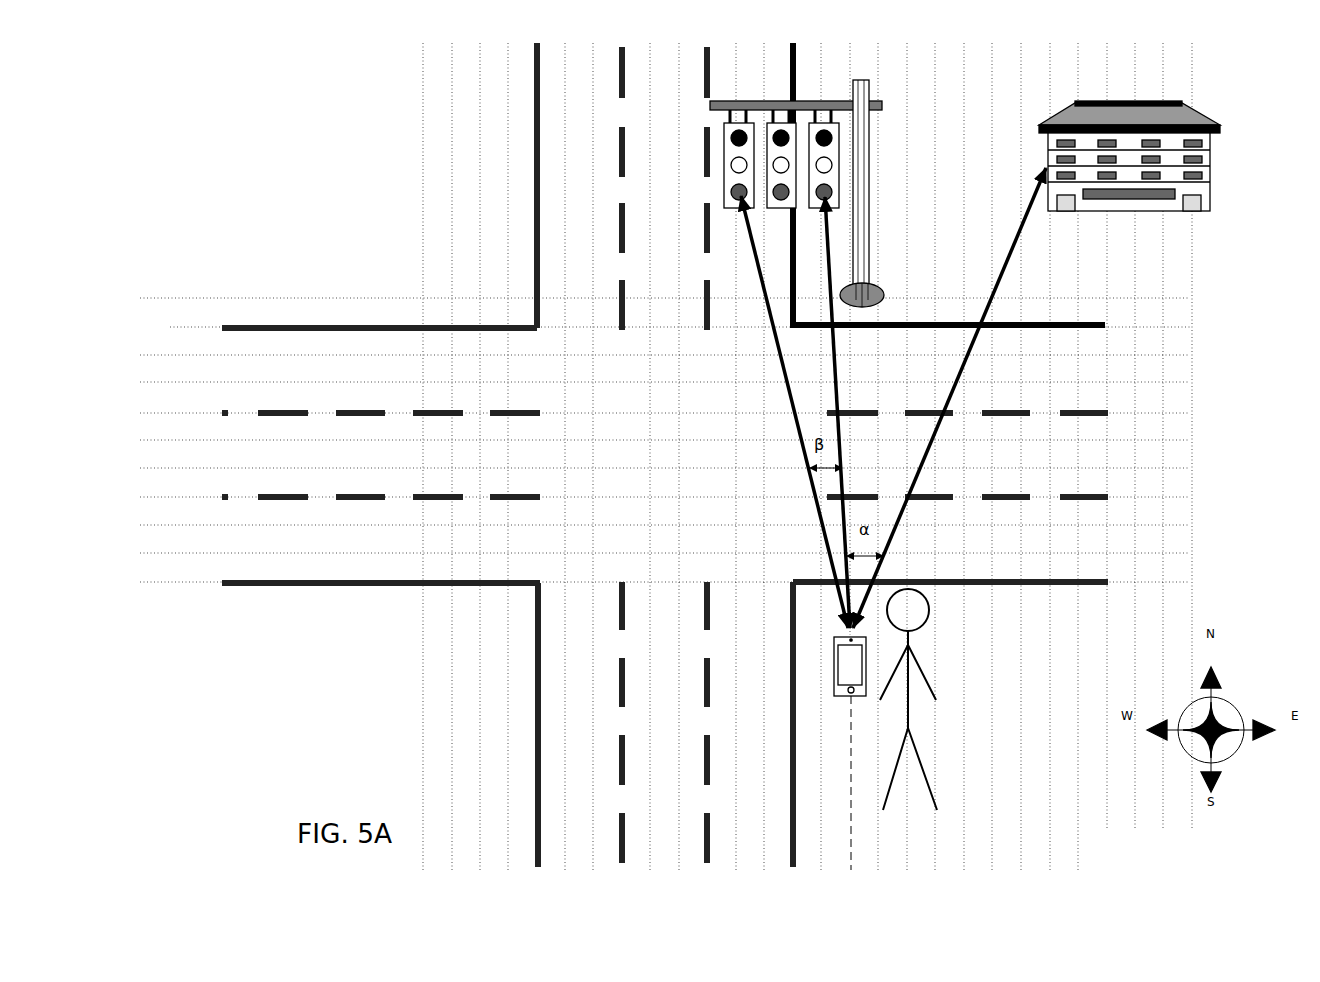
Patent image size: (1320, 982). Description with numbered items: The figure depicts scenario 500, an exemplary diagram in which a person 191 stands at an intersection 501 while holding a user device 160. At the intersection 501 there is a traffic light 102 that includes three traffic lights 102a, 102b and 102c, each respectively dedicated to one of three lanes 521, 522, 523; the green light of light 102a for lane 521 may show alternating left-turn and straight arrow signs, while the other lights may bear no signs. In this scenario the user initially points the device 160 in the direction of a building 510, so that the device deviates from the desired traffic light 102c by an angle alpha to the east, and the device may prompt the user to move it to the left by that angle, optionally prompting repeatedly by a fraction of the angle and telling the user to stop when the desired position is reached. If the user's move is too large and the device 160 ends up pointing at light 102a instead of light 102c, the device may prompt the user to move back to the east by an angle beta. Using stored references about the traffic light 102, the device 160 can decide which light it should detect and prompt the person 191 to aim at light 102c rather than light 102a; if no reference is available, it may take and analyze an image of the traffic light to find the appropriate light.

The scenario 500 is at (399, 127).
The intersection 501 is at (665, 455).
The building 510 is at (1150, 156).
The lane 521 is at (760, 614).
The lane 522 is at (675, 455).
The lane 523 is at (590, 455).
The traffic light 102 is at (878, 90).
The traffic light 102a is at (728, 148).
The traffic light 102b is at (767, 127).
The traffic light 102c is at (839, 146).
The user device 160 is at (844, 753).
The person 191 is at (931, 699).